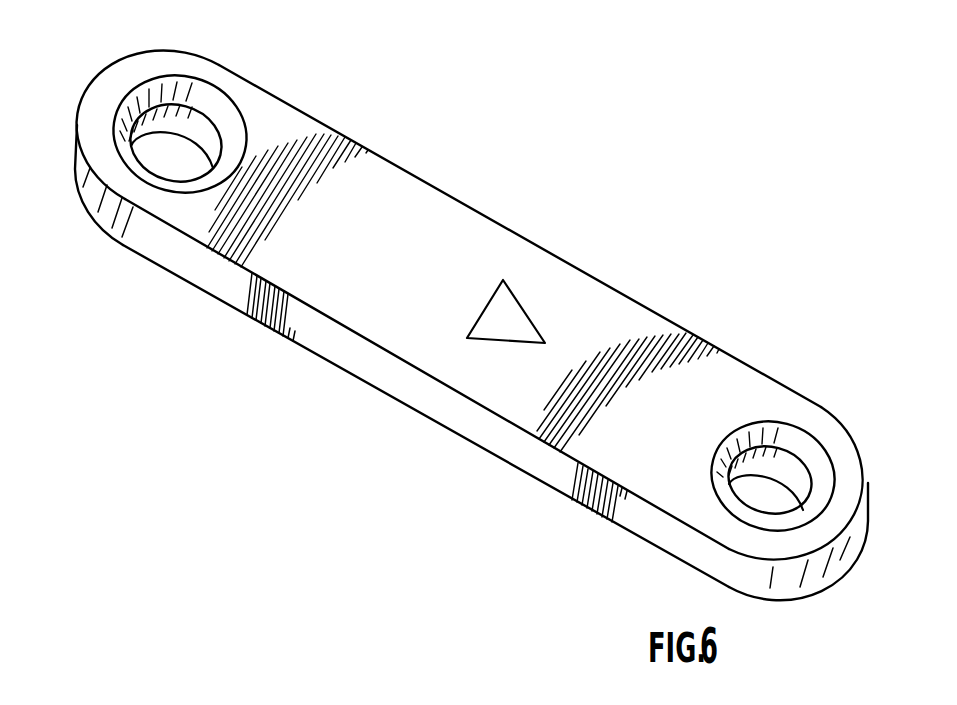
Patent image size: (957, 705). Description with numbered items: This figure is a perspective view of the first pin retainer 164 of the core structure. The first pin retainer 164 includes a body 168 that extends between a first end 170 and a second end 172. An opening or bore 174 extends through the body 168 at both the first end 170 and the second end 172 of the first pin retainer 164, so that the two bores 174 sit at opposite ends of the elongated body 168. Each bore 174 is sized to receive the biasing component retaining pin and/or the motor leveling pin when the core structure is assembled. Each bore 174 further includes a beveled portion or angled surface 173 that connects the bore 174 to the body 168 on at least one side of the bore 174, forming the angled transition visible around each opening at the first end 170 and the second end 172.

The first pin retainer 164 is at (638, 143).
The body 168 is at (342, 295).
The first end 170 is at (70, 127).
The second end 172 is at (648, 570).
The beveled portion or angled surface 173 is at (227, 120).
The opening or bore 174 is at (190, 130).